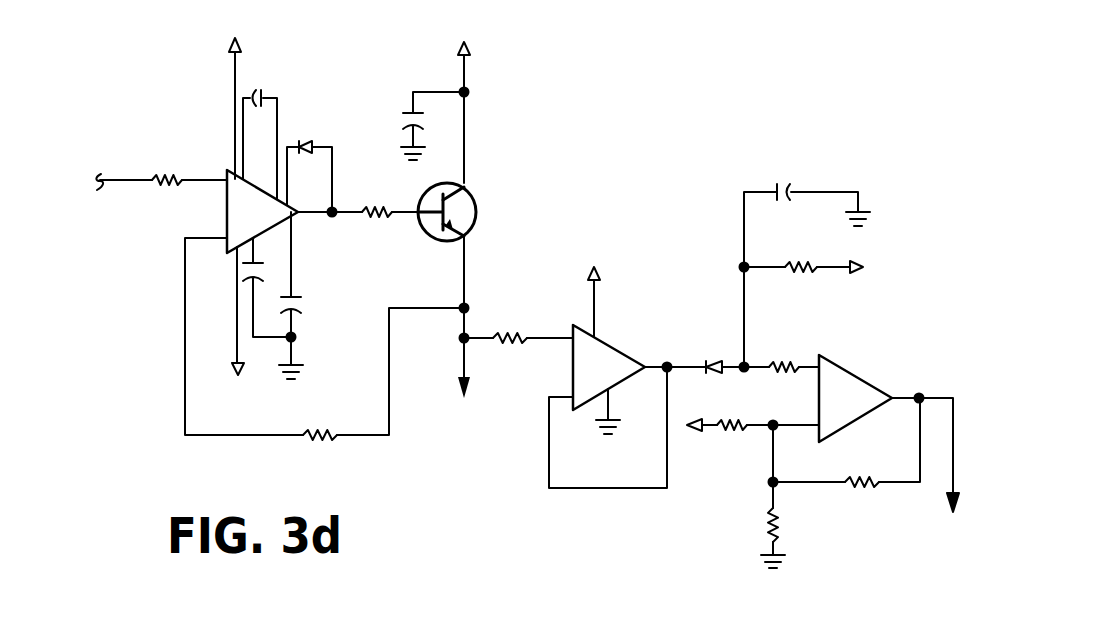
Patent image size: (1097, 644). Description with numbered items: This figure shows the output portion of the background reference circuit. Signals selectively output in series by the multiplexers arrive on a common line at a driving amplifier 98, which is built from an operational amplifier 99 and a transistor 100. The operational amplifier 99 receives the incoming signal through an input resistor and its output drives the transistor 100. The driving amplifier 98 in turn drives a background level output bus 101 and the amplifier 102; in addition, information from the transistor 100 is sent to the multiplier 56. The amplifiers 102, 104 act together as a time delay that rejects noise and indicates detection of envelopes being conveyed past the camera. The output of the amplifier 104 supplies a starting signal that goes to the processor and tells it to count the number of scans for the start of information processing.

The driving amplifier 98 is at (348, 86).
The operational amplifier 99 is at (227, 200).
The transistor 100 is at (477, 207).
The background level output bus 101 is at (464, 362).
The multiplier 56 is at (467, 439).
The amplifier 102 is at (620, 347).
The amplifier 104 is at (860, 377).